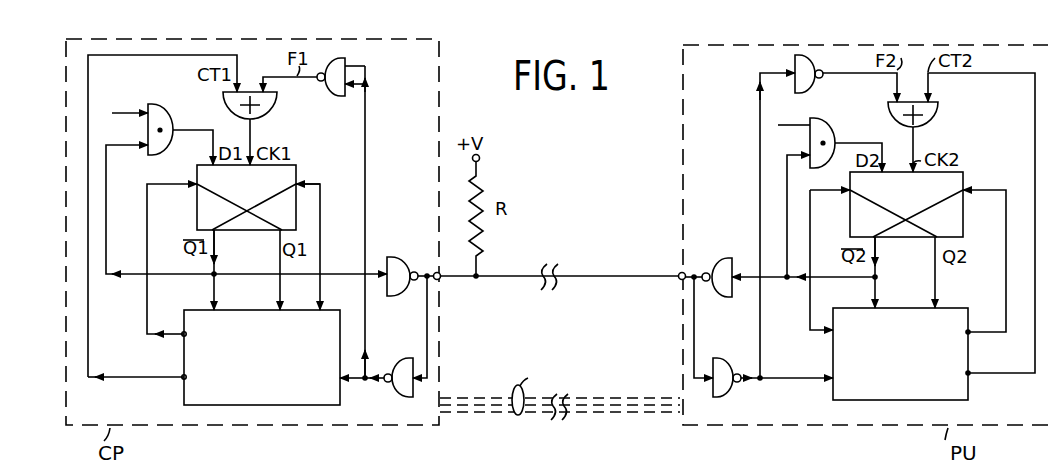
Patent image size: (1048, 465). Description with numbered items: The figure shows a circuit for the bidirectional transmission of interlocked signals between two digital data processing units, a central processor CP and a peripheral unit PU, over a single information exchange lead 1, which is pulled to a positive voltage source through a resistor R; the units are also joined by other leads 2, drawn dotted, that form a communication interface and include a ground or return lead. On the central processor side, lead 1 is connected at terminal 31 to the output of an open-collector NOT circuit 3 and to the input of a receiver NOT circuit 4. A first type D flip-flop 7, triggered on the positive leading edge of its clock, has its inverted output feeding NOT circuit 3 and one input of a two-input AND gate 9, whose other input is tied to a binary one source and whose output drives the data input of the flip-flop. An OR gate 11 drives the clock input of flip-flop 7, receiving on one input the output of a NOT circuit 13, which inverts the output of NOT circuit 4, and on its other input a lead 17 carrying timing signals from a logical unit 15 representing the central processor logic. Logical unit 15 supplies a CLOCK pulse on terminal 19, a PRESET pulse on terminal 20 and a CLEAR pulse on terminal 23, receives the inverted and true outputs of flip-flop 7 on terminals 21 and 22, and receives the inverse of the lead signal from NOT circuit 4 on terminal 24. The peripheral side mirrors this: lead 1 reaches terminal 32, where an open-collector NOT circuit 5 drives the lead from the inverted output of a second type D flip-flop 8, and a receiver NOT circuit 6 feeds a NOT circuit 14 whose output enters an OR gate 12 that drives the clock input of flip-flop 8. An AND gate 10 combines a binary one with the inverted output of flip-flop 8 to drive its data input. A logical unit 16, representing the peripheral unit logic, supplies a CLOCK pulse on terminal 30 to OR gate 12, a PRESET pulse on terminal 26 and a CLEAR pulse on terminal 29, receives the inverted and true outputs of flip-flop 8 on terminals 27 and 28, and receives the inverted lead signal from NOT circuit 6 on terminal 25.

The information exchange lead 1 is at (509, 276).
The other leads 2 is at (560, 390).
The NOT circuit 3 is at (398, 257).
The receiver NOT circuit 4 is at (400, 351).
The NOT circuit 5 is at (724, 259).
The receiver NOT circuit 6 is at (722, 358).
The type D flip-flop 7 is at (298, 166).
The type D flip-flop 8 is at (963, 172).
The AND gate 9 is at (161, 126).
The AND gate 10 is at (832, 124).
The OR gate 11 is at (278, 108).
The OR gate 12 is at (938, 110).
The NOT circuit 13 is at (330, 217).
The NOT circuit 14 is at (814, 88).
The logical unit 15 is at (179, 400).
The logical unit 16 is at (968, 396).
The lead 17 is at (177, 56).
The terminal 19 is at (178, 375).
The terminal 20 is at (180, 333).
The terminal 21 is at (209, 302).
The terminal 22 is at (277, 302).
The terminal 23 is at (317, 302).
The terminal 24 is at (341, 383).
The terminal 25 is at (819, 385).
The terminal 26 is at (818, 334).
The terminal 27 is at (880, 303).
The terminal 28 is at (938, 303).
The terminal 29 is at (969, 331).
The terminal 30 is at (969, 373).
The terminal 31 is at (440, 280).
The terminal 32 is at (679, 280).